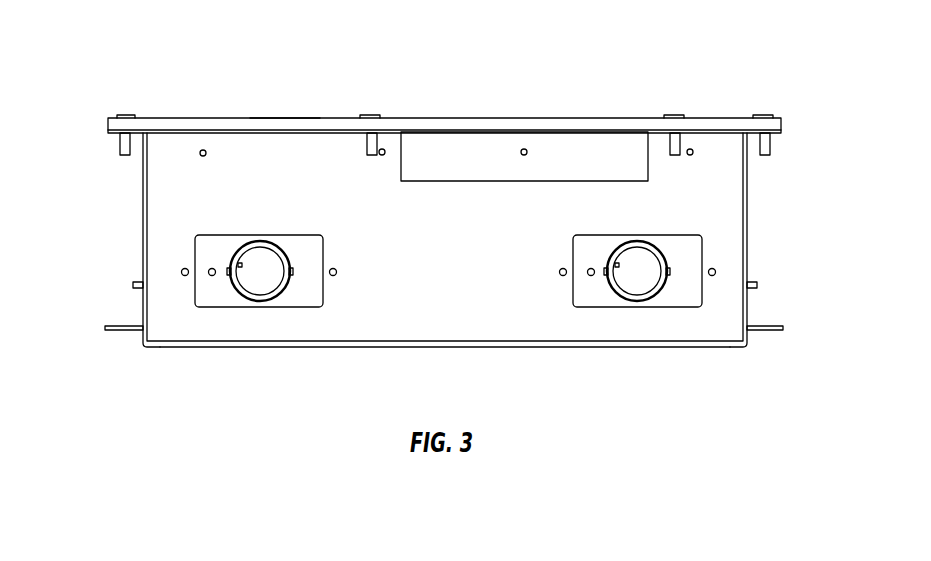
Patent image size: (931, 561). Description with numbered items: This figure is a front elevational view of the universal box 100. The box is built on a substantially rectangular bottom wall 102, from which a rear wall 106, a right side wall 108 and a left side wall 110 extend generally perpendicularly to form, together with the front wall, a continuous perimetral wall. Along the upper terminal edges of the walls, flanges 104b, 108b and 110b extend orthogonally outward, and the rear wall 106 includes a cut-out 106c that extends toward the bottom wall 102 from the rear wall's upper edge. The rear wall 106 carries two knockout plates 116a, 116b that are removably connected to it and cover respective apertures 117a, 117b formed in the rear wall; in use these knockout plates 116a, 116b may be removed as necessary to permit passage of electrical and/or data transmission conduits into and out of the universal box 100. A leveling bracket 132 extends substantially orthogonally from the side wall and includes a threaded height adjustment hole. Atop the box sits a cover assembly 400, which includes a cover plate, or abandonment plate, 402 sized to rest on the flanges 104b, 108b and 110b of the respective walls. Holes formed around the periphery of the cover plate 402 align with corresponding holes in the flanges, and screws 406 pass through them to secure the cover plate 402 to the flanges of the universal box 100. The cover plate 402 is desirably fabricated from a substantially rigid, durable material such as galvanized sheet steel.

The universal box 100 is at (120, 77).
The bottom wall 102 is at (207, 348).
The flange 104b is at (313, 138).
The rear wall 106 is at (457, 322).
The cut-out 106c is at (524, 143).
The right side wall 108 is at (143, 232).
The flange 108b is at (117, 137).
The left side wall 110 is at (750, 213).
The flange 110b is at (772, 140).
The knockout plate 116a is at (280, 307).
The knockout plate 116b is at (684, 295).
The aperture 117a is at (323, 292).
The aperture 117b is at (593, 307).
The leveling bracket 132 is at (118, 326).
The cover assembly 400 is at (250, 116).
The cover plate 402 is at (285, 118).
The screws 406 is at (387, 148).